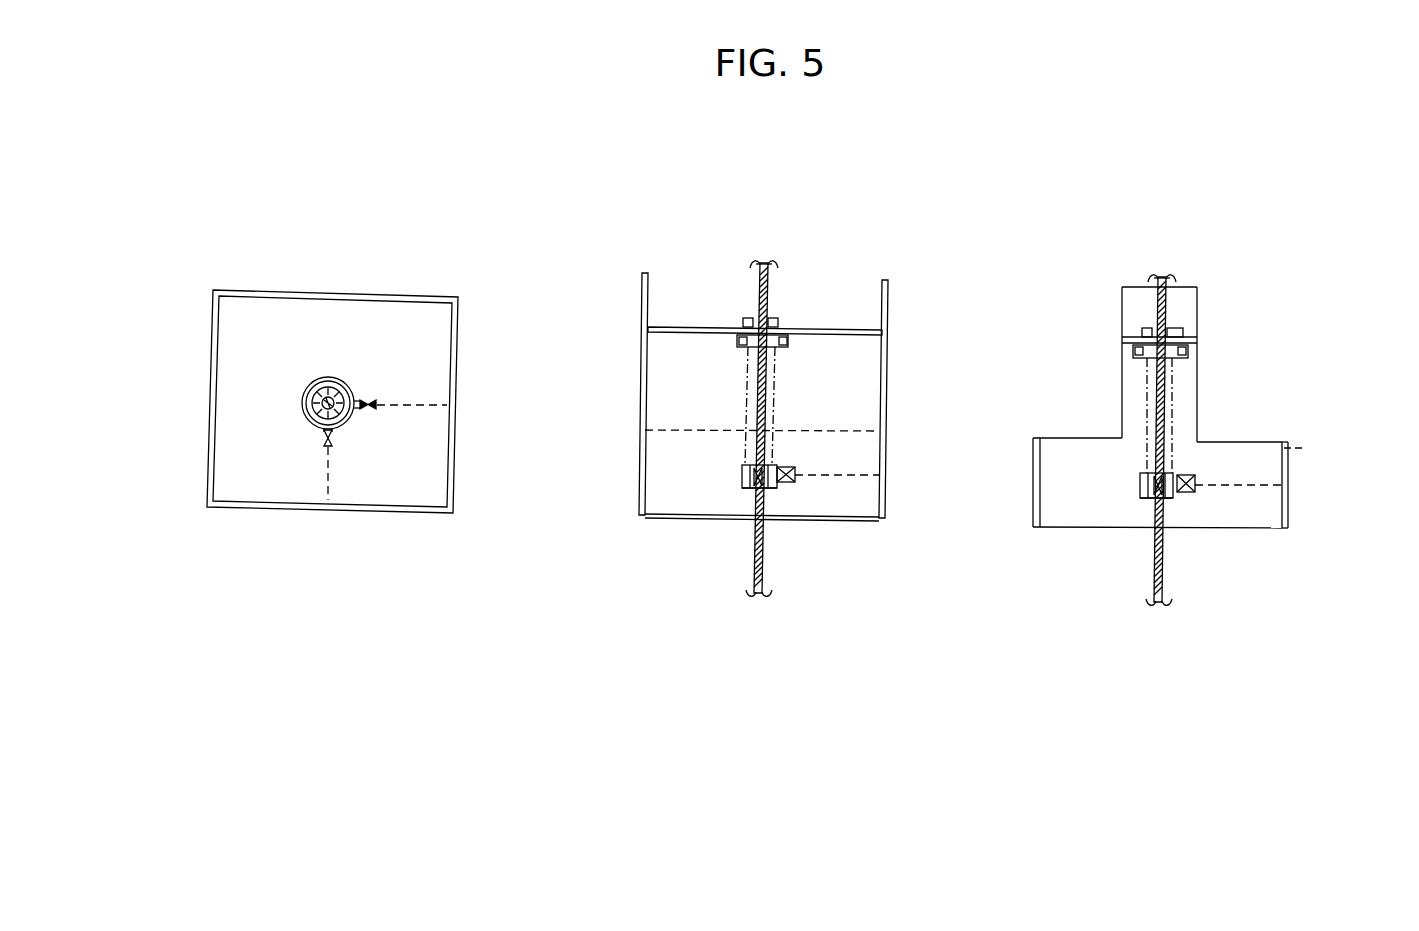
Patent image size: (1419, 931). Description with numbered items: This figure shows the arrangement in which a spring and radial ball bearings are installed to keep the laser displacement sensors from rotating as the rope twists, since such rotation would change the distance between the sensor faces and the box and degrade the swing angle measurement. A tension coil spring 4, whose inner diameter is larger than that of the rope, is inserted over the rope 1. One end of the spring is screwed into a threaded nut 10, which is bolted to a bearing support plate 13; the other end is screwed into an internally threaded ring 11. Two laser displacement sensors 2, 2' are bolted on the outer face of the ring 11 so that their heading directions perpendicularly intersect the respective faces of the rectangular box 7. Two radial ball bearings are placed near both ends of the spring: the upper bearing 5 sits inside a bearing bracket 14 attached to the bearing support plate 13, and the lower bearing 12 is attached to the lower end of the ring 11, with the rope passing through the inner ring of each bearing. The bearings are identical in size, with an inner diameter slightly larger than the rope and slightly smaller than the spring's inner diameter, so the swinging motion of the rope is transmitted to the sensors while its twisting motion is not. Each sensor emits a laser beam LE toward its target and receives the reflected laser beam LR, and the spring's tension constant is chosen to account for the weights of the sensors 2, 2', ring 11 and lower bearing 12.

The rope 1 is at (345, 386).
The laser displacement sensor 2 is at (839, 530).
The laser displacement sensor 2' is at (828, 453).
The tension coil spring 4 is at (312, 418).
The upper bearing 5 is at (760, 318).
The rectangular box 7 is at (408, 508).
The threaded nut 10 is at (730, 341).
The ring 11 is at (303, 400).
The lower bearing 12 is at (362, 396).
The bearing support plate 13 is at (662, 320).
The bearing bracket 14 is at (785, 324).
The laser beam LE is at (798, 472).
The reflected laser beam LR is at (786, 486).